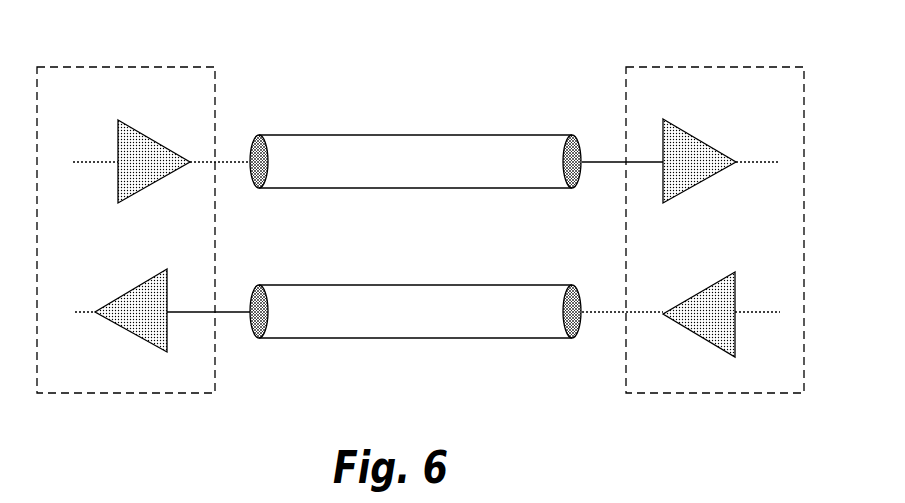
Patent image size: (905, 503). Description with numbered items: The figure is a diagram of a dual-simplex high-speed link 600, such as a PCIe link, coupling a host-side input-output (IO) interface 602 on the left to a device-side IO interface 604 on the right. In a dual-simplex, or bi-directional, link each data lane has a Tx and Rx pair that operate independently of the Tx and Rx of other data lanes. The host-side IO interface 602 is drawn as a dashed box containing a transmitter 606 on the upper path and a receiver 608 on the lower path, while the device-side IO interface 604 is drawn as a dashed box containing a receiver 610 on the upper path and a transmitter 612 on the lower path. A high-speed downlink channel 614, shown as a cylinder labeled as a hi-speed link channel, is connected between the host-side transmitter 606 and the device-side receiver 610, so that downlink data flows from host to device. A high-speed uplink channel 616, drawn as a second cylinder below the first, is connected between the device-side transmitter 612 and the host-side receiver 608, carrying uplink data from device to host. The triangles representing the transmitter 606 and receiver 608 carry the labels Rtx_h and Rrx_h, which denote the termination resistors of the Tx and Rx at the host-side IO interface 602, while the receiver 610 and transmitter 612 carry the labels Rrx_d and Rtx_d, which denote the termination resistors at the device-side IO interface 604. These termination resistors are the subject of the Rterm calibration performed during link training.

The dual-simplex high-speed link 600 is at (425, 222).
The host-side input-output (IO) interface 602 is at (104, 383).
The device-side IO interface 604 is at (768, 383).
The transmitter 606 is at (141, 183).
The receiver 608 is at (147, 335).
The receiver 610 is at (685, 180).
The transmitter 612 is at (714, 335).
The high-speed downlink channel 614 is at (530, 178).
The high-speed uplink channel 616 is at (530, 330).